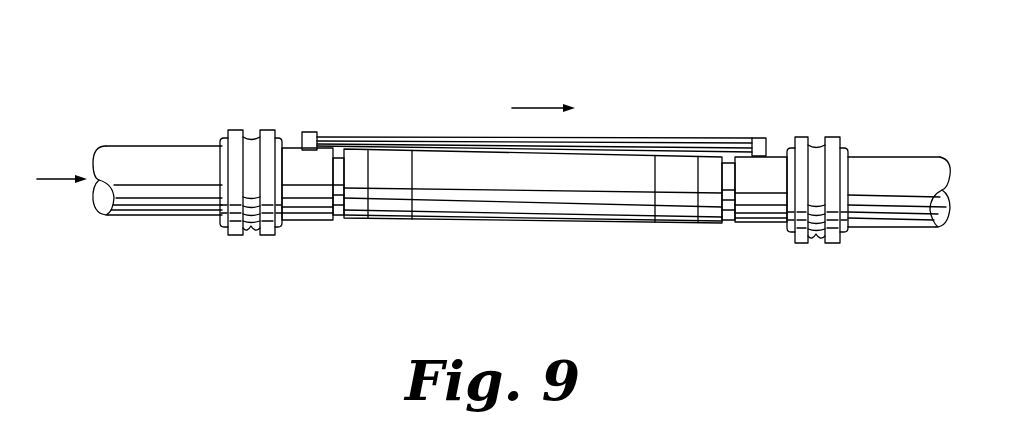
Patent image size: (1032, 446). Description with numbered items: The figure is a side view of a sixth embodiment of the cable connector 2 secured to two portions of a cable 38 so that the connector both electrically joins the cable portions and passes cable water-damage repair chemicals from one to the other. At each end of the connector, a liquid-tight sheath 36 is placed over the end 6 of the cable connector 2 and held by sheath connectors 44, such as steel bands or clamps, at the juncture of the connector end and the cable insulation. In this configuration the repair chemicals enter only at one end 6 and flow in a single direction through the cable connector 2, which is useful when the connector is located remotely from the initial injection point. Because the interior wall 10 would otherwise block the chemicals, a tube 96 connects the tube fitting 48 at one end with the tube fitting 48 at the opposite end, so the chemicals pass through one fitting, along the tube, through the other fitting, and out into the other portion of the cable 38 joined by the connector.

The cable connector 2 is at (641, 278).
The end 6 is at (292, 155).
The interior wall 10 is at (533, 157).
The sheath 36 is at (252, 138).
The cable 38 is at (158, 155).
The sheath connectors 44 is at (237, 130).
The tube fitting 48 is at (313, 132).
The tube 96 is at (498, 138).